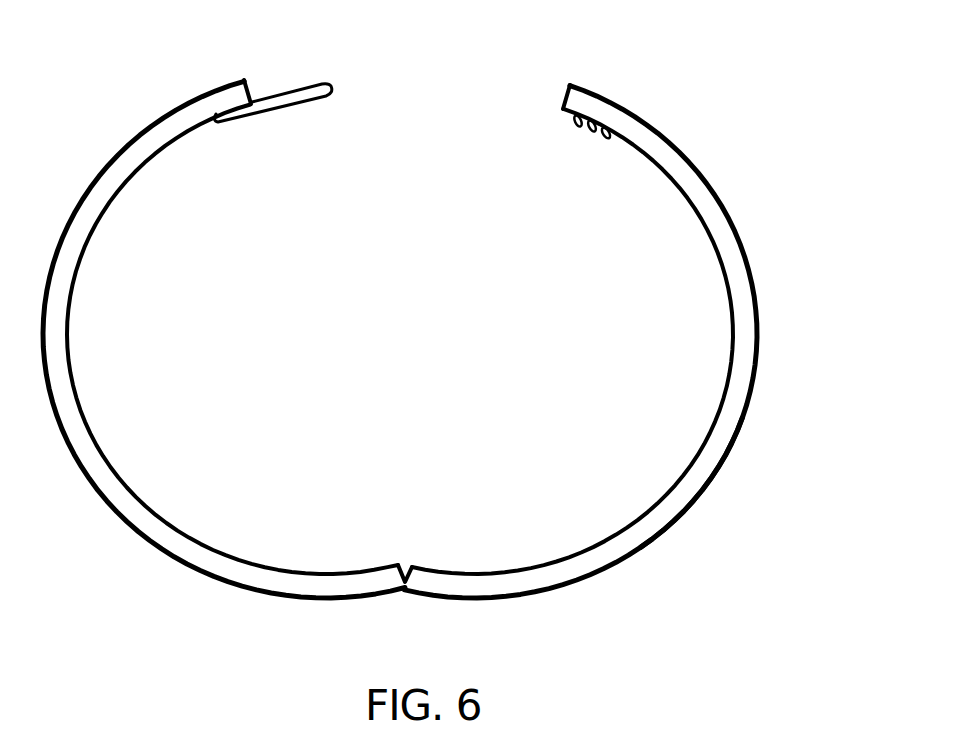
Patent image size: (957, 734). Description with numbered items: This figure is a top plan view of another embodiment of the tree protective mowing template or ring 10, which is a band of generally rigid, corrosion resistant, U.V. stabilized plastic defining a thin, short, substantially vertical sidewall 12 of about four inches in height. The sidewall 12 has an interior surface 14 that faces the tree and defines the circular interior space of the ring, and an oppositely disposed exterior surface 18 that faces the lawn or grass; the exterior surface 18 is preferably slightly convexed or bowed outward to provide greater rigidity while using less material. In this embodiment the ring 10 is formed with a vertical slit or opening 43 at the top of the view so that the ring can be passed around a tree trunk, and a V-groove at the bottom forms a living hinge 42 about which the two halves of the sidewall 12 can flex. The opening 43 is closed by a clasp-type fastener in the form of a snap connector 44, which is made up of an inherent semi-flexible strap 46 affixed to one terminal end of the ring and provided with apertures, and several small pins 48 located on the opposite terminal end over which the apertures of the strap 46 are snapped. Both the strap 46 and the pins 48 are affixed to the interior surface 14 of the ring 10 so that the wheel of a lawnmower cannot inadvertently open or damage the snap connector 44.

The mowing template or ring 10 is at (757, 247).
The sidewall 12 is at (63, 365).
The interior surface 14 is at (722, 390).
The exterior surface 18 is at (708, 492).
The living hinge 42 is at (402, 598).
The opening 43 is at (430, 100).
The snap connector 44 is at (562, 112).
The semi-flexible strap 46 is at (273, 102).
The pins 48 is at (606, 142).